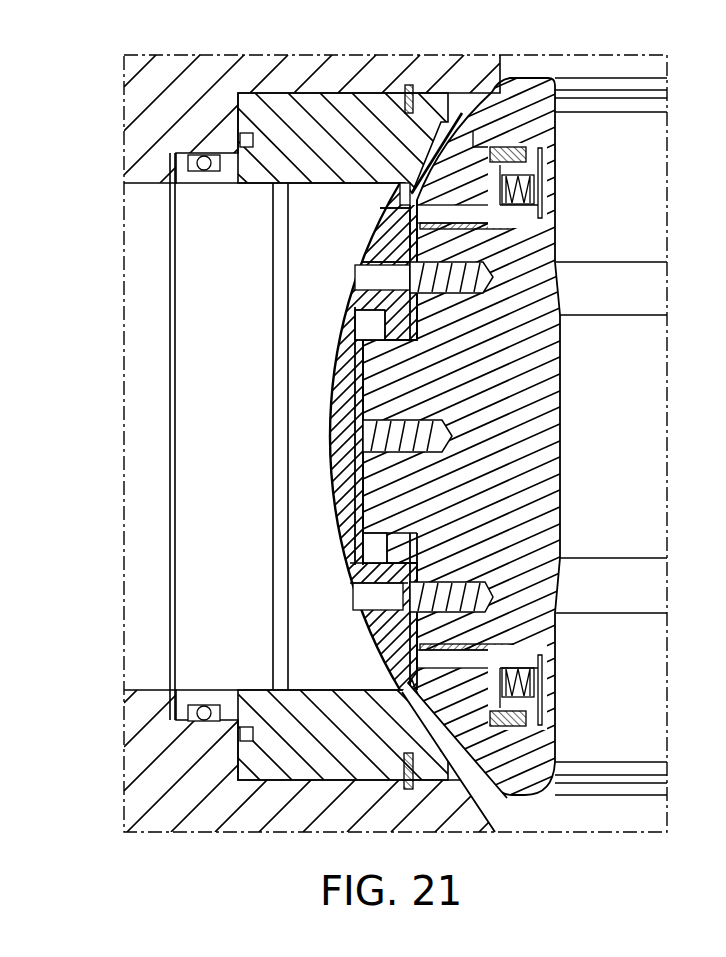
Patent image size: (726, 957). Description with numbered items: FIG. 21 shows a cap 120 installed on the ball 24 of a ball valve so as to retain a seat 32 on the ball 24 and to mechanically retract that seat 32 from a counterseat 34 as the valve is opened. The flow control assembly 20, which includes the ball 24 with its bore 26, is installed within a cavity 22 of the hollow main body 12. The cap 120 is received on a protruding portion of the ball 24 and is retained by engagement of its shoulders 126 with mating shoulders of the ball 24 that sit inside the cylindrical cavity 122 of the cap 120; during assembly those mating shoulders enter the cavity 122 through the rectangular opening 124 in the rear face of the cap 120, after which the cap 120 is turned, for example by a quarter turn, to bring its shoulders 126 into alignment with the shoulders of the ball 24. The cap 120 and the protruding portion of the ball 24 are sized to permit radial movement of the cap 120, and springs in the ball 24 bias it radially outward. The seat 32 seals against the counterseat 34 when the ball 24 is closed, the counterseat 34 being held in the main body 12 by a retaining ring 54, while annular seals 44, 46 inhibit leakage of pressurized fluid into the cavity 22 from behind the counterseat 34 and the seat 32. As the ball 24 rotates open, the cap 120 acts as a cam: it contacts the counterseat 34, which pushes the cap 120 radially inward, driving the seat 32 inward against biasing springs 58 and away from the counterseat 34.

The main body 12 is at (148, 76).
The flow control assembly 20 is at (592, 813).
The cavity 22 is at (512, 804).
The ball 24 is at (541, 431).
The bore 26 is at (563, 486).
The seat 32 is at (458, 172).
The counterseat 34 is at (296, 118).
The annular seal 44 is at (205, 168).
The annular seal 46 is at (515, 152).
The retaining ring 54 is at (408, 103).
The biasing springs 58 is at (530, 186).
The cap 120 is at (330, 437).
The cylindrical cavity 122 is at (372, 310).
The rectangular opening 124 is at (395, 337).
The shoulders 126 is at (402, 320).